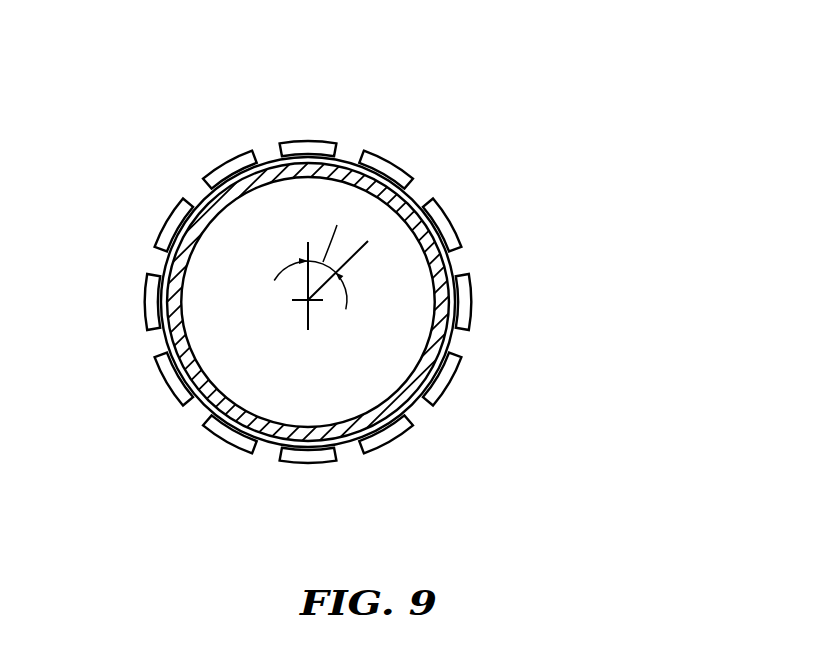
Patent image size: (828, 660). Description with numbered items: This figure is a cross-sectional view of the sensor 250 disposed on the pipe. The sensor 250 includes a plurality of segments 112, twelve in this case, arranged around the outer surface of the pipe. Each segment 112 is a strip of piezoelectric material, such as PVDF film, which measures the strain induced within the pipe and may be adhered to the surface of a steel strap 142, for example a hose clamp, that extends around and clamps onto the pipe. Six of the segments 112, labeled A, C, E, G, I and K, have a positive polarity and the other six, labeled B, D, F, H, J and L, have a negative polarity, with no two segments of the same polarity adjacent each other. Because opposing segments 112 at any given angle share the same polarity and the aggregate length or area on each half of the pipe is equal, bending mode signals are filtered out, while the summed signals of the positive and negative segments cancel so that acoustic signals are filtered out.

The sensor segment 112 is at (325, 139).
The steel strap 142 is at (347, 157).
The sensor 250 is at (393, 299).